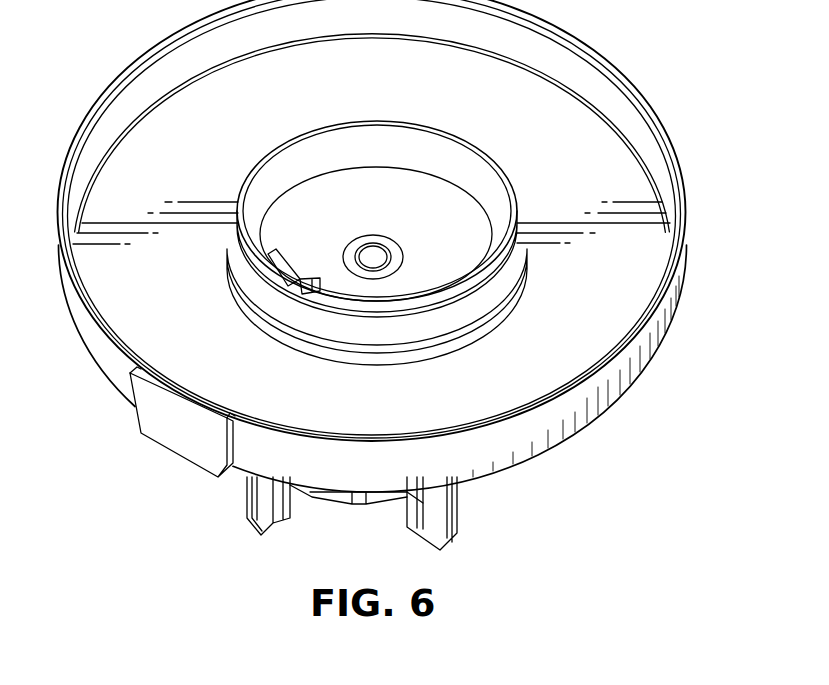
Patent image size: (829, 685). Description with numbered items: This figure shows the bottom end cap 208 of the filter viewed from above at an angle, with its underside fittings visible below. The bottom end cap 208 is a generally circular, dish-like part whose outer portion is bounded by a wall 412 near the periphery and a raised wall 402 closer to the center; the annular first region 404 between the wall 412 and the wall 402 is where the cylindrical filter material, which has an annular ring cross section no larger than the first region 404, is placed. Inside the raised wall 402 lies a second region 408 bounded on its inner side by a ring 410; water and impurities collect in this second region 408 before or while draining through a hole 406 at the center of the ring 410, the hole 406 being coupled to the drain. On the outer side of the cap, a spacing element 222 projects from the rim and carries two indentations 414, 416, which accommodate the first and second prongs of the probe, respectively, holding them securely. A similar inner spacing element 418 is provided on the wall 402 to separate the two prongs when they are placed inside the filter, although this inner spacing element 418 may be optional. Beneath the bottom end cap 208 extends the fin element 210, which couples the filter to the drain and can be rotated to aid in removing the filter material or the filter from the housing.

The first region 404 is at (164, 287).
The bottom end cap 208 is at (603, 393).
The wall 412 is at (137, 92).
The wall 402 is at (488, 172).
The second region 408 is at (391, 218).
The ring 410 is at (388, 243).
The hole 406 is at (377, 259).
The inner spacing element 418 is at (295, 278).
The spacing element 222 is at (170, 433).
The indentation 416 is at (137, 368).
The indentation 414 is at (226, 418).
The fin element 210 is at (443, 504).